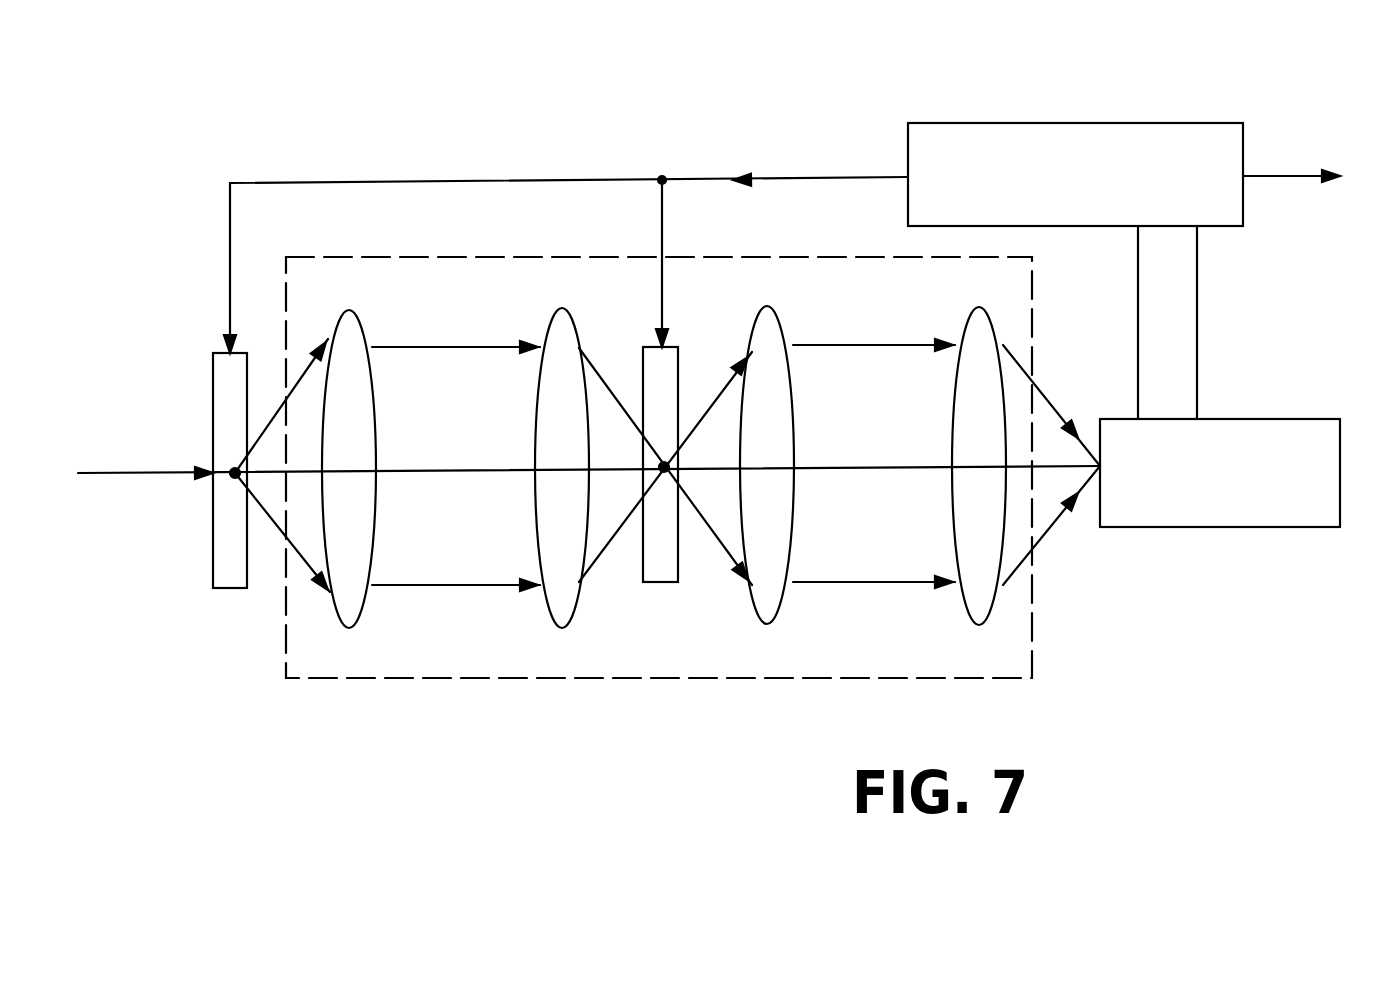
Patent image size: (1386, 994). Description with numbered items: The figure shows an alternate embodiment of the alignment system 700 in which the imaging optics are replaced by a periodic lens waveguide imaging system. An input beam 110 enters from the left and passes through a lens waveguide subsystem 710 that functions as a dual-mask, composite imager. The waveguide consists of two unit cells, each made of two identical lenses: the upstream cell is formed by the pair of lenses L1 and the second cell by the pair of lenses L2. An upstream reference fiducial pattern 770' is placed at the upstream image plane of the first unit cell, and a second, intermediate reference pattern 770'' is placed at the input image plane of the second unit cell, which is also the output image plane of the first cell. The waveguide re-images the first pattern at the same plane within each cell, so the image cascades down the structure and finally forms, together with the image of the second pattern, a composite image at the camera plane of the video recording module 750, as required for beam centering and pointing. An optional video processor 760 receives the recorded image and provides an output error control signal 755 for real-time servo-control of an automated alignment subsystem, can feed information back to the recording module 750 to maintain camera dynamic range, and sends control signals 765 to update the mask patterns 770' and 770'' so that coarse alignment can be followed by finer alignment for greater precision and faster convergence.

The imaging system 700 is at (432, 119).
The input light beam 110 is at (137, 471).
The upstream reference fiducial pattern 770' is at (206, 518).
The intermediate reference pattern 770'' is at (674, 550).
The lens waveguide subsystem 710 is at (417, 683).
The lenses of the upstream unit cell L1 is at (372, 330).
The lenses of the second unit cell L2 is at (775, 322).
The video processor 760 is at (1000, 92).
The control signals 765 is at (795, 178).
The output error control signal 755 is at (1288, 172).
The video recording module 750 is at (1213, 527).